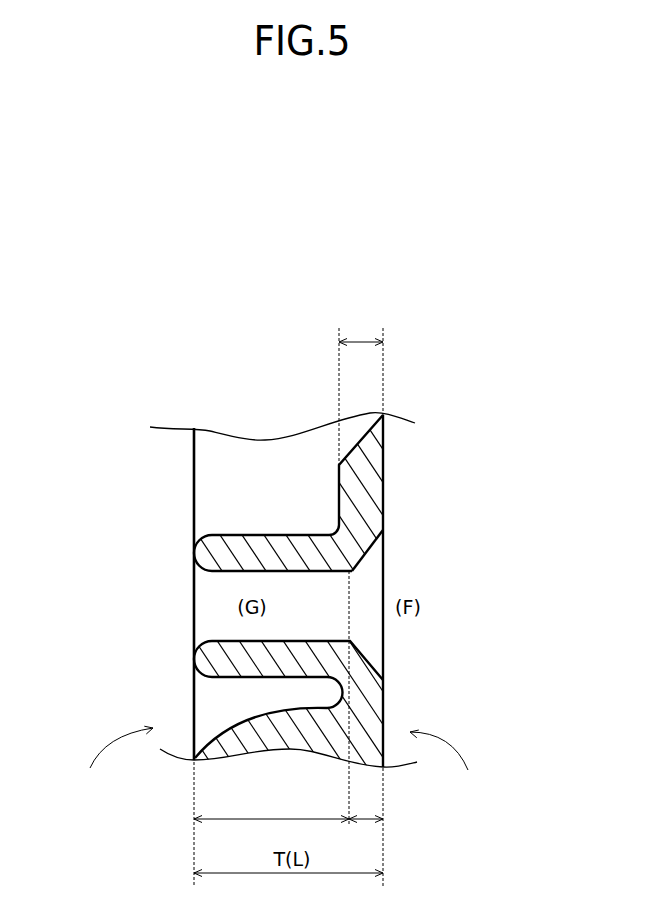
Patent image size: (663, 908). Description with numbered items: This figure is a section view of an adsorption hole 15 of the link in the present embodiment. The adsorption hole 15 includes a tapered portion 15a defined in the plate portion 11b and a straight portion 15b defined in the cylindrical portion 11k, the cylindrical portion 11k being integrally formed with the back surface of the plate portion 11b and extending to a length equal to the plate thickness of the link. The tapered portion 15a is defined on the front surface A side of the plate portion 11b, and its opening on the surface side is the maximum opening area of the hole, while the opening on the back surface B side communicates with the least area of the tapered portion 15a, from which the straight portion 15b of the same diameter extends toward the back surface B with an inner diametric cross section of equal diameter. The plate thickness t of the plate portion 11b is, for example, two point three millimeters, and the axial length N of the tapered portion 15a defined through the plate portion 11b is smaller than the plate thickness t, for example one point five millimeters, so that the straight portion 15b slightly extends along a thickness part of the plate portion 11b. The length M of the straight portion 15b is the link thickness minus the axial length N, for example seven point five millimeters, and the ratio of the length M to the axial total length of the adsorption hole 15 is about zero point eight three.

The plate portion 11b is at (385, 488).
The cylindrical portion 11k is at (233, 534).
The adsorption hole 15 is at (393, 635).
The tapered portion 15a is at (385, 567).
The straight portion 15b is at (233, 572).
The plate thickness t is at (361, 328).
The length of the straight portion M is at (271, 809).
The axial length of the tapered portion N is at (364, 822).
The front surface A is at (443, 766).
The back surface B is at (117, 764).